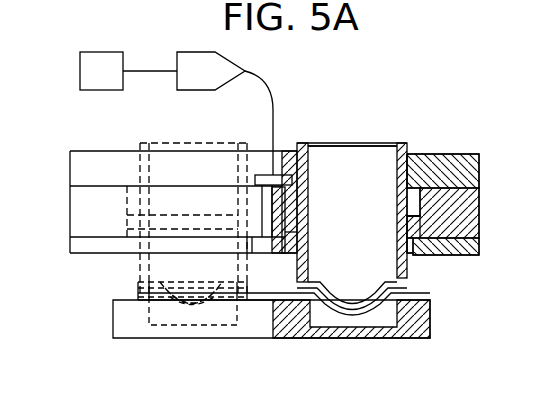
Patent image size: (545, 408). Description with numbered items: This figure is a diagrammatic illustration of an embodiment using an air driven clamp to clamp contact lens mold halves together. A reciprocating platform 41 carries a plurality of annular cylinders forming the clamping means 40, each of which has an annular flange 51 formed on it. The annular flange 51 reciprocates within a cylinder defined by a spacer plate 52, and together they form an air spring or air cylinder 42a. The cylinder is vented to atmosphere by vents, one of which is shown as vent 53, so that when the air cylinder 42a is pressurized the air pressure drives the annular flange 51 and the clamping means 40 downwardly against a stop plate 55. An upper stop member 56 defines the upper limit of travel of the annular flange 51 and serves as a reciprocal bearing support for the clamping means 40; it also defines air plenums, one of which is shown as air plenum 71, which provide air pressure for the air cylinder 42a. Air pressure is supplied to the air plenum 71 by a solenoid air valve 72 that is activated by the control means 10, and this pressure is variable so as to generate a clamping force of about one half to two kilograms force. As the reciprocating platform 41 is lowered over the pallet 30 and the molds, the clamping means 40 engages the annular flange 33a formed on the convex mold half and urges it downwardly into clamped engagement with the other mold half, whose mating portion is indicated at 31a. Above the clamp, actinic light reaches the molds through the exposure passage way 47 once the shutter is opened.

The control means 10 is at (101, 71).
The solenoid air valve 72 is at (198, 113).
The air plenum 71 is at (265, 175).
The exposure passage way 47 is at (333, 138).
The clamping means 40 is at (404, 148).
The upper stop member 56 is at (455, 157).
The reciprocating platform 41 is at (532, 165).
The air cylinder 42a is at (405, 203).
The annular flange 51 is at (415, 222).
The spacer plate 52 is at (470, 210).
The stop plate 55 is at (470, 246).
The annular flange 33a is at (410, 283).
The lower diaphragm 31a is at (403, 297).
The vent 53 is at (290, 255).
The pallet 30 is at (345, 338).